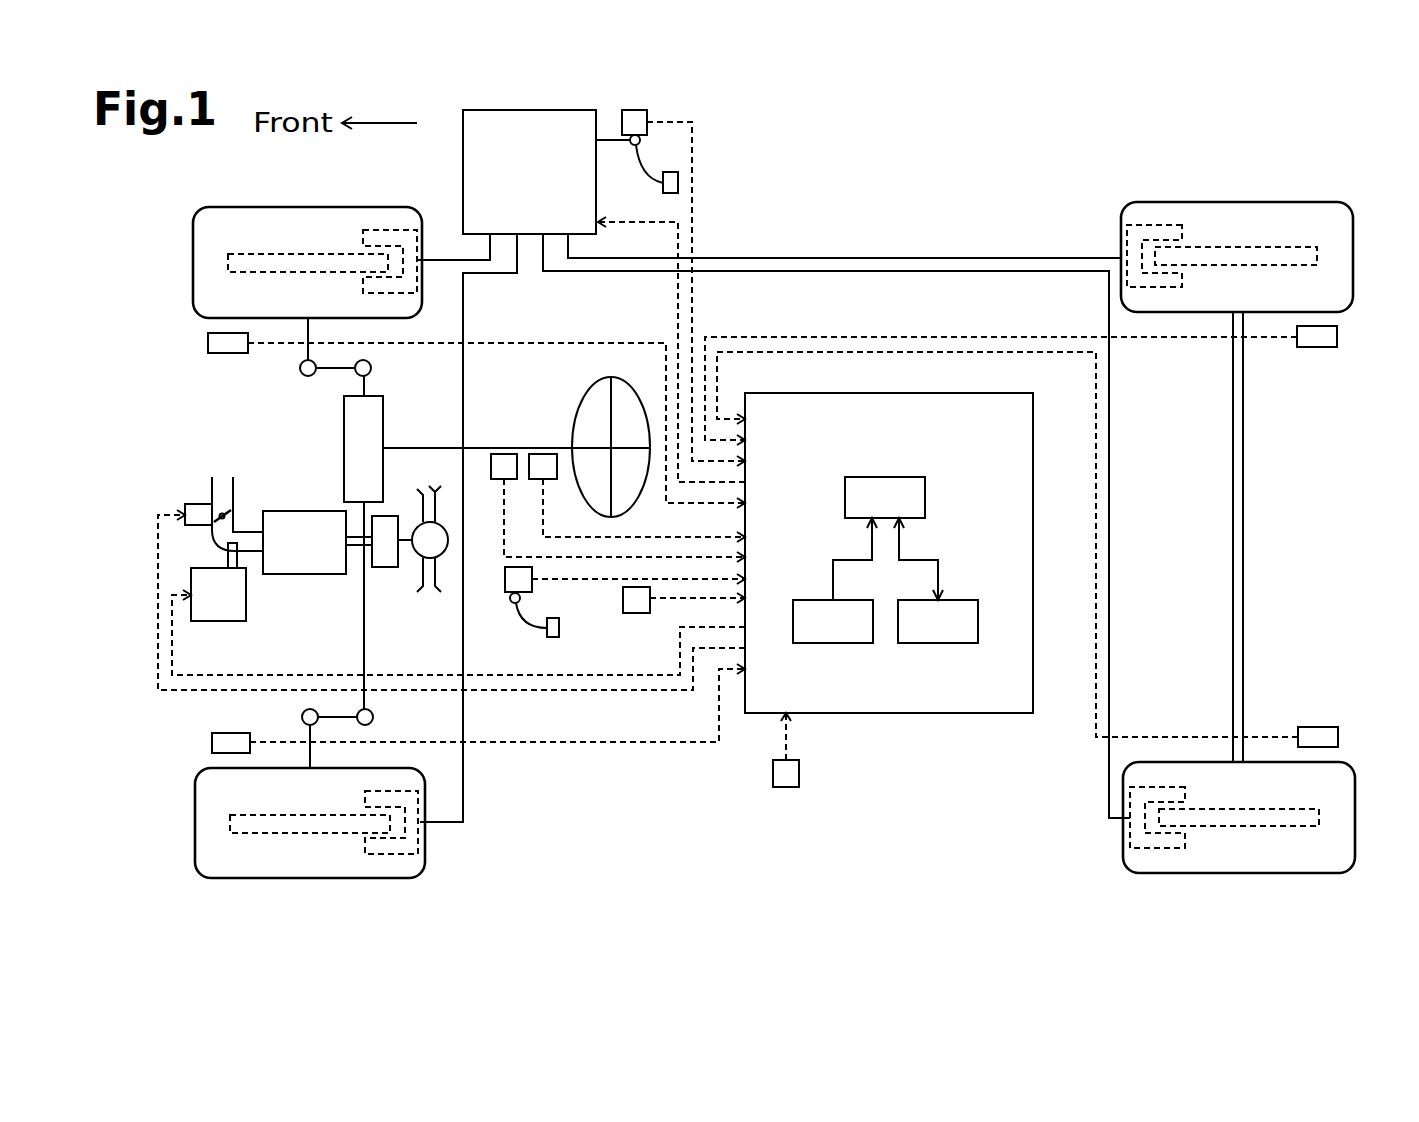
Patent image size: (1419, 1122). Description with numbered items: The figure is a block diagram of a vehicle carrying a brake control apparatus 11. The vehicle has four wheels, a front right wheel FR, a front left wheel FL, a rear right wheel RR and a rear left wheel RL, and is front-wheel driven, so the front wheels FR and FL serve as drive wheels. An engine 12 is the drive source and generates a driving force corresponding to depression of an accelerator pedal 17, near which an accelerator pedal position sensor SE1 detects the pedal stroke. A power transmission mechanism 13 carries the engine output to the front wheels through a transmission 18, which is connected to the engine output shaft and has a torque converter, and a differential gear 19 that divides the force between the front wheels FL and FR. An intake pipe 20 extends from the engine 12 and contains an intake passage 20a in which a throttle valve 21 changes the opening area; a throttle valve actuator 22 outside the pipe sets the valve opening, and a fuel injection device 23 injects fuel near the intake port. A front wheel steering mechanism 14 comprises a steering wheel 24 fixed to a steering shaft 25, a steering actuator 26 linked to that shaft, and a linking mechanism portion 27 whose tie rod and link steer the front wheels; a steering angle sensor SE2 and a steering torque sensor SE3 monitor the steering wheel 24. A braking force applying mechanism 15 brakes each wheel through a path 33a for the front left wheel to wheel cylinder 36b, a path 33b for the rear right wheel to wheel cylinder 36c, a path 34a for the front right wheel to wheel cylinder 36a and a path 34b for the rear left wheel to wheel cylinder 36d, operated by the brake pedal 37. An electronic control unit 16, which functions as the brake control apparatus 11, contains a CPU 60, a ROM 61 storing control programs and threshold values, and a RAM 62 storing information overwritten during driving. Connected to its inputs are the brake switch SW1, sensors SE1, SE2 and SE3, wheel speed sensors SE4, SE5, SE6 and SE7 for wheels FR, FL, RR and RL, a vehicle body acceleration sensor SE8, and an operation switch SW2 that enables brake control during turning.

The brake control apparatus 11 is at (982, 713).
The engine 12 is at (313, 574).
The power transmission mechanism 13 is at (411, 496).
The front wheel steering mechanism 14 is at (494, 404).
The braking force applying mechanism 15 is at (578, 100).
The electronic control unit 16 is at (890, 713).
The accelerator pedal 17 is at (559, 628).
The transmission 18 is at (385, 567).
The differential gear 19 is at (443, 556).
The intake pipe 20 is at (212, 477).
The intake passage 20a is at (233, 477).
The throttle valve 21 is at (220, 532).
The throttle valve actuator 22 is at (185, 510).
The fuel injection device 23 is at (218, 621).
The steering wheel 24 is at (590, 387).
The steering shaft 25 is at (483, 455).
The steering actuator 26 is at (383, 409).
The linking mechanism portion 27 is at (365, 645).
The path for the front left wheel 33a is at (465, 803).
The path for the rear right wheel 33b is at (1025, 258).
The path for the front right wheel 34a is at (432, 258).
The path for the rear left wheel 34b is at (1025, 271).
The wheel cylinder 36a is at (368, 230).
The wheel cylinder 36b is at (385, 854).
The wheel cylinder 36c is at (1160, 225).
The wheel cylinder 36d is at (1157, 848).
The brake pedal 37 is at (678, 183).
The CPU 60 is at (890, 477).
The ROM 61 is at (833, 643).
The RAM 62 is at (938, 643).
The front right wheel FR is at (306, 207).
The front left wheel FL is at (300, 878).
The rear right wheel RR is at (1237, 202).
The rear left wheel RL is at (1240, 873).
The accelerator pedal position sensor SE1 is at (532, 585).
The steering angle sensor SE2 is at (543, 454).
The steering torque sensor SE3 is at (504, 454).
The wheel speed sensor SE4 is at (208, 343).
The wheel speed sensor SE5 is at (212, 742).
The wheel speed sensor SE6 is at (1337, 337).
The wheel speed sensor SE7 is at (1338, 737).
The vehicle body acceleration sensor SE8 is at (637, 613).
The brake switch SW1 is at (647, 110).
The operation switch SW2 is at (773, 775).